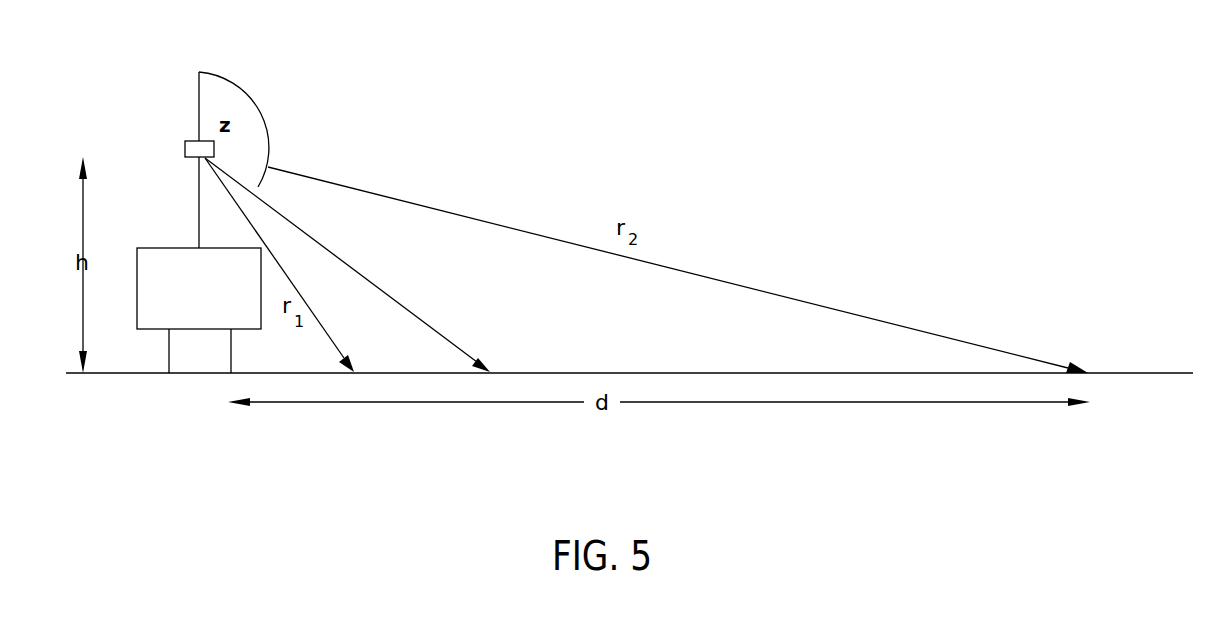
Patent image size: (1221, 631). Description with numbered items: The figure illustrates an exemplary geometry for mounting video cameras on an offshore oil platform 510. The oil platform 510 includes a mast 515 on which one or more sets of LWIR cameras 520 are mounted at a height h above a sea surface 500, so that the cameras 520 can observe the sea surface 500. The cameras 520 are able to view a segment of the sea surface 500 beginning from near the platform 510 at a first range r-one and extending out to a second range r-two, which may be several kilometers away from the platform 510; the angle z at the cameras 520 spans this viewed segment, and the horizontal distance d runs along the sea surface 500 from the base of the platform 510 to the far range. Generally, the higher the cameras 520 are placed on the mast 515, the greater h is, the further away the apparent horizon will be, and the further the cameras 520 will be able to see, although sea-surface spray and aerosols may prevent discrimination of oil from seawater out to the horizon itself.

The sea surface 500 is at (828, 373).
The offshore oil platform 510 is at (168, 248).
The mast 515 is at (197, 183).
The LWIR cameras 520 is at (195, 139).